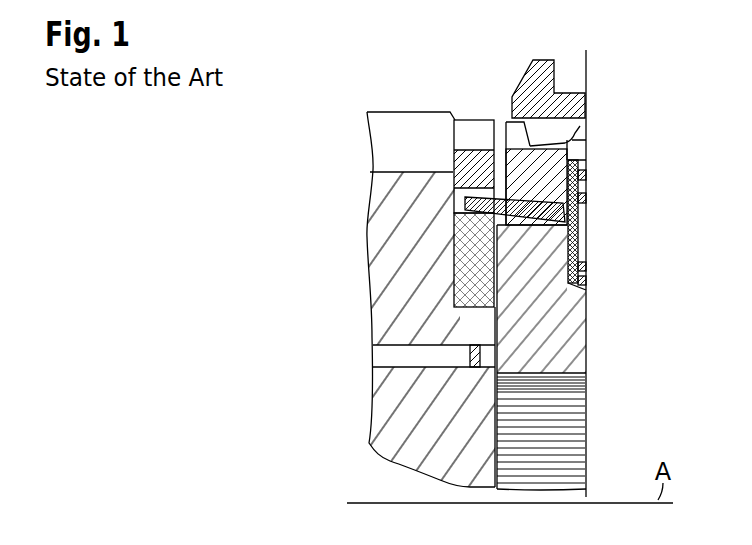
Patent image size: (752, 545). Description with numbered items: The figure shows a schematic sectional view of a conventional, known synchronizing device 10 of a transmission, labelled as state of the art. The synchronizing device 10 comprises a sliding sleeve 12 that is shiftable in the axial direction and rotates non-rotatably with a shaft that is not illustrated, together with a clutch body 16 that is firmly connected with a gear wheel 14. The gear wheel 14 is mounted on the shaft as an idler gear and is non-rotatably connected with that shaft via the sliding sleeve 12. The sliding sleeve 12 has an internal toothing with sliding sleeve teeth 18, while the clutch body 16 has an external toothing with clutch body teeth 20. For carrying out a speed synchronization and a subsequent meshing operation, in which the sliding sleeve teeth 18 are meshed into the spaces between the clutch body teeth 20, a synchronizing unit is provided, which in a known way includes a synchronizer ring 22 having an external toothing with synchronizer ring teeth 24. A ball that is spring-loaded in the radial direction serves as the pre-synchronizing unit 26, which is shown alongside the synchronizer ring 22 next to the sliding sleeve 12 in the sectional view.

The synchronizing device 10 is at (232, 153).
The sliding sleeve 12 is at (543, 56).
The gear wheel 14 is at (400, 307).
The clutch body 16 is at (468, 262).
The sliding sleeve teeth 18 is at (578, 127).
The clutch body teeth 20 is at (467, 128).
The synchronizer ring 22 is at (580, 163).
The synchronizer ring teeth 24 is at (502, 133).
The pre-synchronizing unit 26 is at (582, 199).